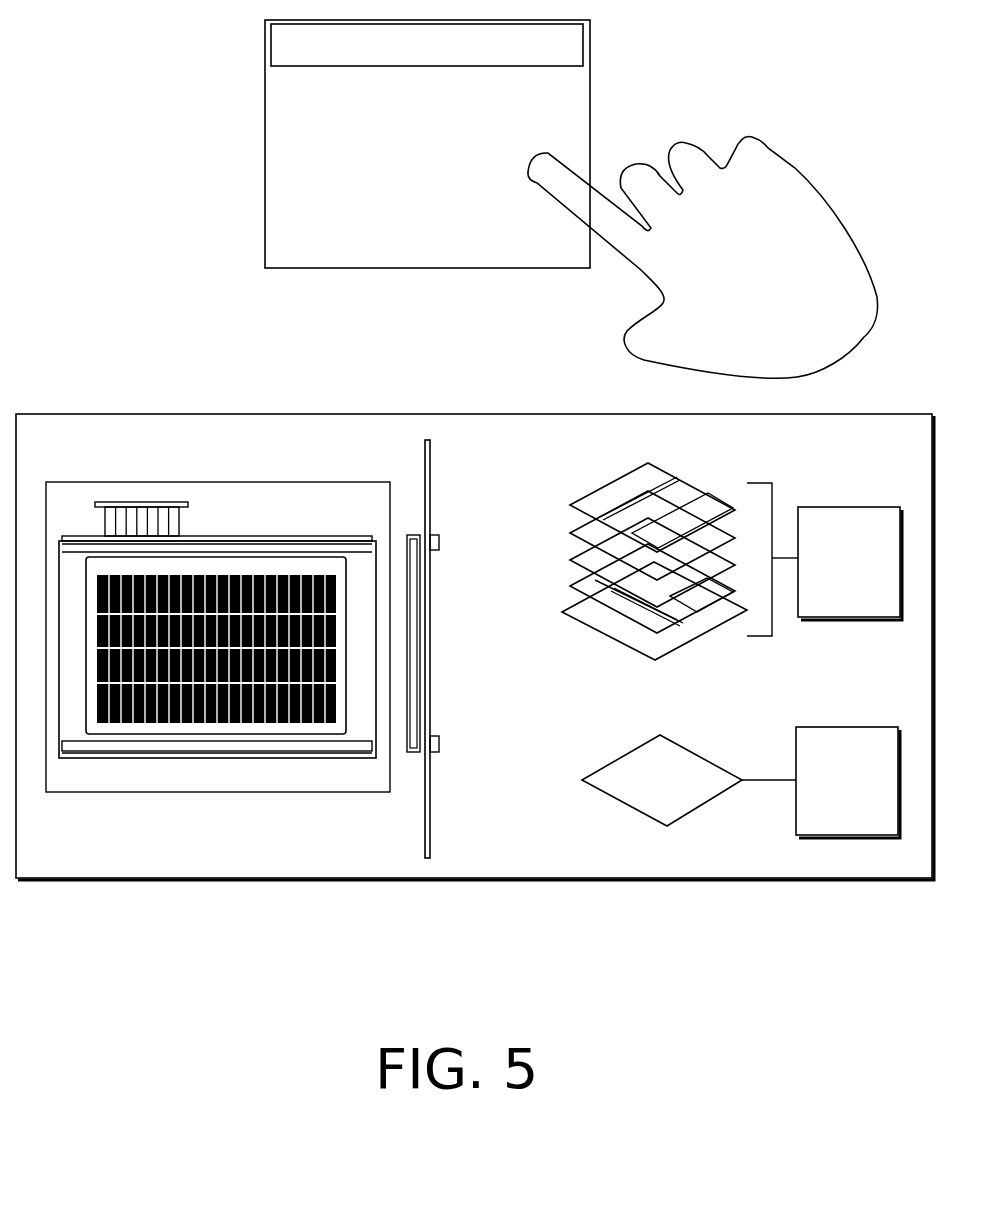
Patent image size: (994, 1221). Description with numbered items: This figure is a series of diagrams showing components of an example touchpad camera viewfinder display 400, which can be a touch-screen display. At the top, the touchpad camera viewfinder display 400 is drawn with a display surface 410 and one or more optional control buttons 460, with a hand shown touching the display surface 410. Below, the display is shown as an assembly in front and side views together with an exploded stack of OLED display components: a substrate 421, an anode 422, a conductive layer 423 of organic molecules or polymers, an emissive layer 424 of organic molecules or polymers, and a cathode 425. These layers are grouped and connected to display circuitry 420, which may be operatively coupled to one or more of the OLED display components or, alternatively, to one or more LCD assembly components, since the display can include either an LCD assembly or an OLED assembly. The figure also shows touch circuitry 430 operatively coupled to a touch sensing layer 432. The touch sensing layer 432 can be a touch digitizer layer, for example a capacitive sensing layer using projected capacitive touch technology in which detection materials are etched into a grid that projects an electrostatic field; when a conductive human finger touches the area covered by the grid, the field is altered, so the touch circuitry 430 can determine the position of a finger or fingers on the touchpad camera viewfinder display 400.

The touchpad camera viewfinder display 400 is at (47, 450).
The display surface 410 is at (419, 168).
The control buttons 460 is at (419, 55).
The display circuitry 420 is at (833, 597).
The substrate 421 is at (562, 612).
The anode 422 is at (570, 586).
The conductive layer 423 is at (570, 560).
The emissive layer 424 is at (570, 533).
The cathode 425 is at (570, 505).
The touch circuitry 430 is at (831, 816).
The touch sensing layer 432 is at (582, 780).